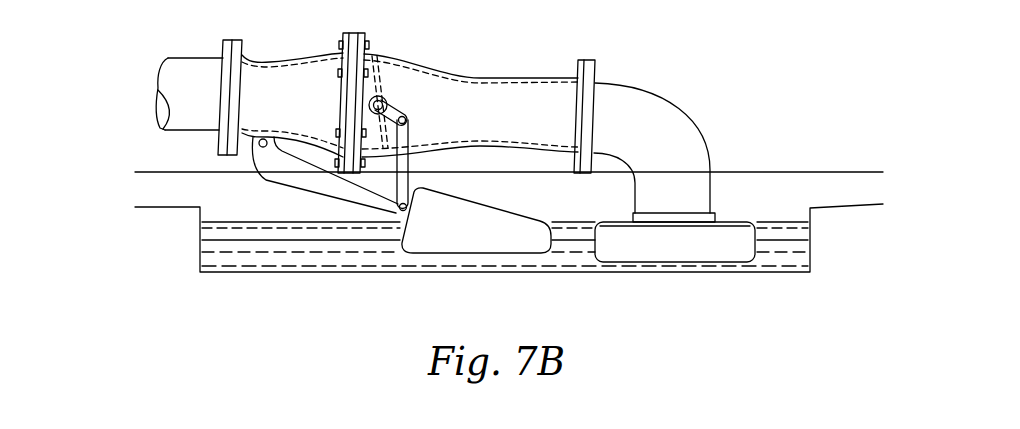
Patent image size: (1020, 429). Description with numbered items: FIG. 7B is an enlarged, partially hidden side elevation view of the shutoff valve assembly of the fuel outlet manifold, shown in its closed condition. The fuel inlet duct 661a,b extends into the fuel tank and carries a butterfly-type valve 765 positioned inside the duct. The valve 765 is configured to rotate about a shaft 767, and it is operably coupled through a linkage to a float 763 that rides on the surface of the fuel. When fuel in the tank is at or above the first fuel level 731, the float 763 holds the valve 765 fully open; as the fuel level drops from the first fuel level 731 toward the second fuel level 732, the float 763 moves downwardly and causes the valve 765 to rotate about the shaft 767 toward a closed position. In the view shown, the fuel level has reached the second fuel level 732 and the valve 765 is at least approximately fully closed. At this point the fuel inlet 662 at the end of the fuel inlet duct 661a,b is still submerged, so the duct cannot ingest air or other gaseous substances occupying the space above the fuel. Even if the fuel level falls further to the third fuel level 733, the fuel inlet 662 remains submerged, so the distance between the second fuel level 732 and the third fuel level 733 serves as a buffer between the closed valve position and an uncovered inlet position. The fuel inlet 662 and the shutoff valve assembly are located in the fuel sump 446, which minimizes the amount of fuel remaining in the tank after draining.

The fuel inlet duct 661a,b is at (198, 58).
The valve 765 is at (385, 75).
The shaft 767 is at (387, 100).
The float 763 is at (478, 200).
The fuel inlet 662 is at (755, 243).
The first fuel level 731 is at (747, 172).
The second fuel level 732 is at (784, 221).
The third fuel level 733 is at (788, 250).
The fuel sump 446 is at (200, 245).